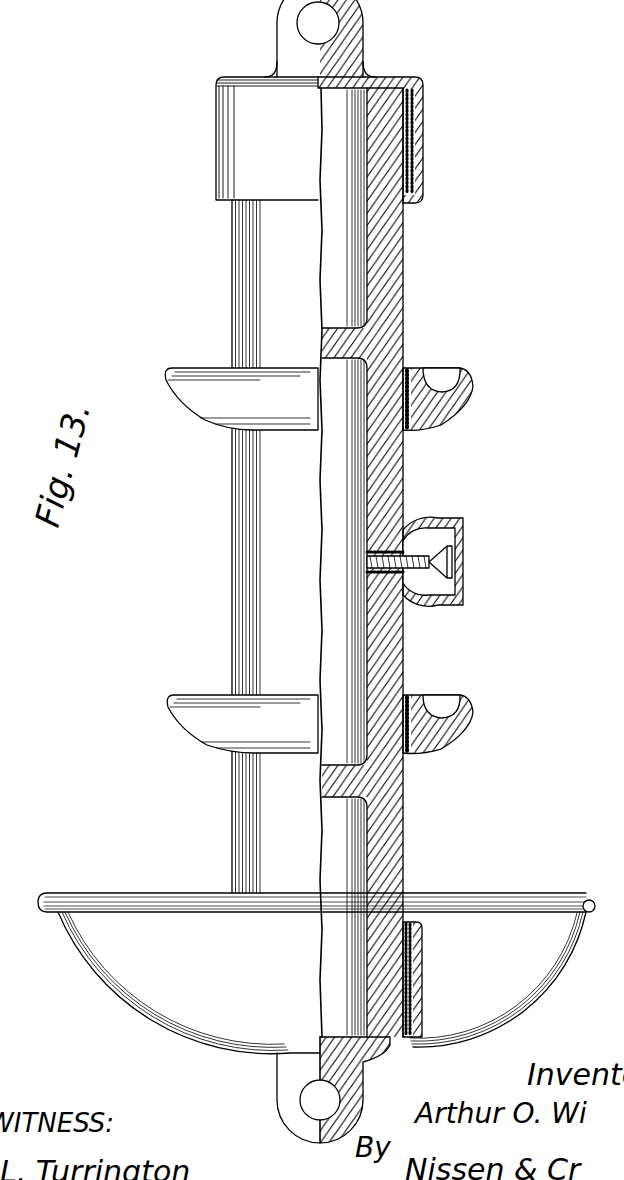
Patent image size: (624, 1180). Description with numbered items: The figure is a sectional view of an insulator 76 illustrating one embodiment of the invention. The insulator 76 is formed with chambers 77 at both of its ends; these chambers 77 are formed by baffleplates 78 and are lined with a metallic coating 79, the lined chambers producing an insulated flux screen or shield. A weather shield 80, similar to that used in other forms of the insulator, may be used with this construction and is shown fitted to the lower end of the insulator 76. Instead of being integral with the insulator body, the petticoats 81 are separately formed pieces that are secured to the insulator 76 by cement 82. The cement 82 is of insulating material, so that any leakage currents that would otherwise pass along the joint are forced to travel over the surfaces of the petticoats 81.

The insulator 76 is at (387, 465).
The chambers 77 is at (335, 208).
The baffleplates 78 is at (340, 347).
The metallic coating 79 is at (360, 238).
The weather shield 80 is at (517, 993).
The petticoats 81 is at (465, 408).
The cement 82 is at (406, 370).